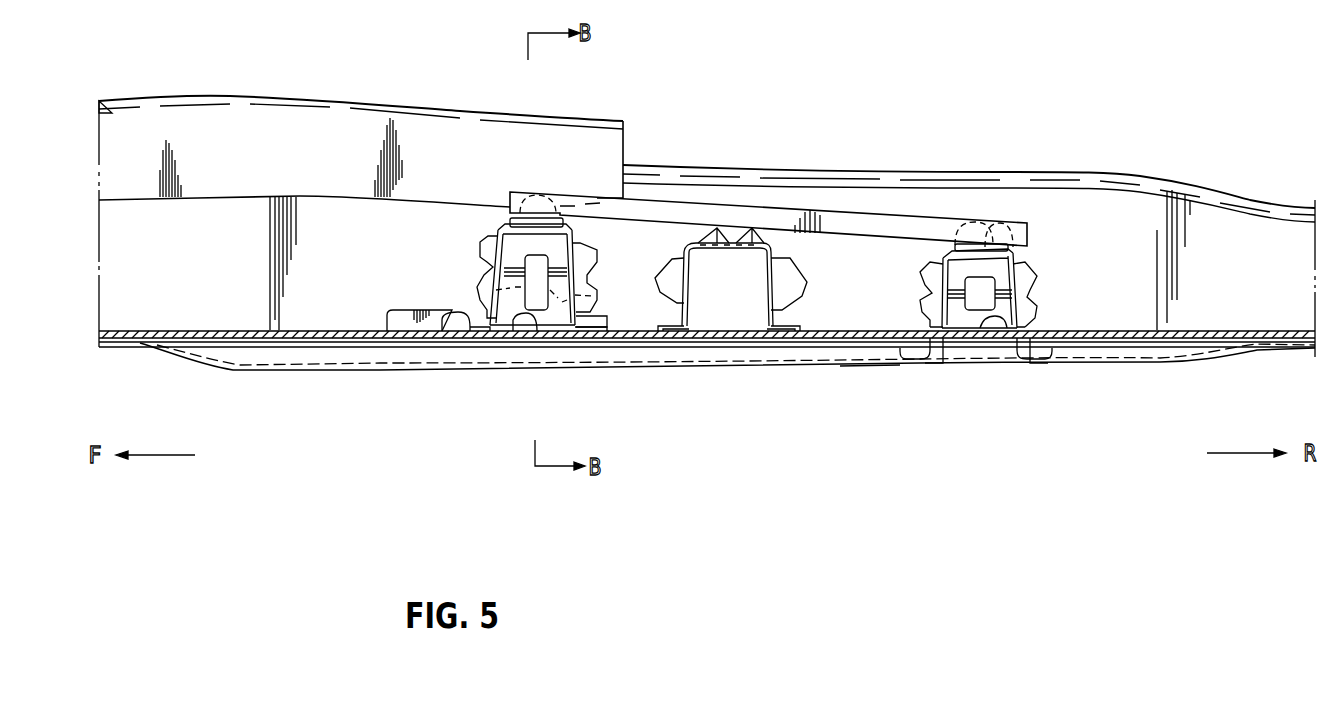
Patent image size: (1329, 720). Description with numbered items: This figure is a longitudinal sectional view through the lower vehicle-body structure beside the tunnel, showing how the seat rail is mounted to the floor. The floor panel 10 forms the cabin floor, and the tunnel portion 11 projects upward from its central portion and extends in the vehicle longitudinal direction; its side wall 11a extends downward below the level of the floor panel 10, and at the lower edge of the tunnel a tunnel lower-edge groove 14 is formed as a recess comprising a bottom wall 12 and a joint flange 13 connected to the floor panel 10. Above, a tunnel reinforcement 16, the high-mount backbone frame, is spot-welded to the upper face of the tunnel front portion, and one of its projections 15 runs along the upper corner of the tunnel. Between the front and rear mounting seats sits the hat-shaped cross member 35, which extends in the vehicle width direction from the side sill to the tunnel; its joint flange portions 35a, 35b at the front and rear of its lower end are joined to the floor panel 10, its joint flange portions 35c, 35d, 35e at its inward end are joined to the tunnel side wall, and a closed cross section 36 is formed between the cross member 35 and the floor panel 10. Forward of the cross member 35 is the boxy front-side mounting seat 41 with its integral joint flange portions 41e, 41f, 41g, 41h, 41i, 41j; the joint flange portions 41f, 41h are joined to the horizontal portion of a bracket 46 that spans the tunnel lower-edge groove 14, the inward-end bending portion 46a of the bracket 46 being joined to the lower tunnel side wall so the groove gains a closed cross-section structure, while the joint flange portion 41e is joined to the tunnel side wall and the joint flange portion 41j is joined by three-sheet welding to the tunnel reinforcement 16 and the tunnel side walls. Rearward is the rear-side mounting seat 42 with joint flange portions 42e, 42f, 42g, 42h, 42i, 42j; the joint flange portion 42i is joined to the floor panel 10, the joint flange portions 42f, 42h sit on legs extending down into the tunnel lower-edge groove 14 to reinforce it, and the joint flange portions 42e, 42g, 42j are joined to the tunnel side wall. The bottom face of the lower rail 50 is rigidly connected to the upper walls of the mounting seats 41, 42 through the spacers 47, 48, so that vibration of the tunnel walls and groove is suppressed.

The floor panel 10 is at (1122, 331).
The tunnel portion 11 is at (1040, 168).
The side wall of tunnel portion 11a is at (1122, 230).
The bottom wall 12 is at (969, 364).
The joint flange 13 is at (1097, 358).
The tunnel lower edge groove 14 is at (868, 372).
The projection 15 is at (218, 97).
The tunnel reinforcement 16 is at (325, 96).
The cross member 35 is at (745, 240).
The joint flange portion 35a is at (668, 340).
The joint flange portion 35b is at (788, 340).
The joint flange portion 35c is at (672, 262).
The joint flange portion 35d is at (720, 238).
The joint flange portion 35e is at (751, 232).
The closed cross section 36 is at (713, 294).
The front-side mounting seat 41 is at (490, 261).
The joint flange portion 41e is at (495, 237).
The joint flange portion 41f is at (443, 313).
The joint flange portion 41g is at (590, 268).
The joint flange portion 41h is at (594, 315).
The joint flange portion 41i is at (515, 315).
The joint flange portion 41j is at (548, 195).
The rear-side mounting seat 42 is at (1018, 283).
The joint flange portion 42e is at (925, 264).
The joint flange portion 42f is at (901, 368).
The joint flange portion 42g is at (1038, 290).
The joint flange portion 42h is at (1050, 355).
The joint flange portion 42i is at (985, 322).
The joint flange portion 42j is at (975, 222).
The bracket 46 is at (380, 316).
The inward-end bending portion 46a is at (403, 311).
The spacer 47 is at (535, 208).
The spacer 48 is at (995, 226).
The lower rail 50 is at (887, 212).